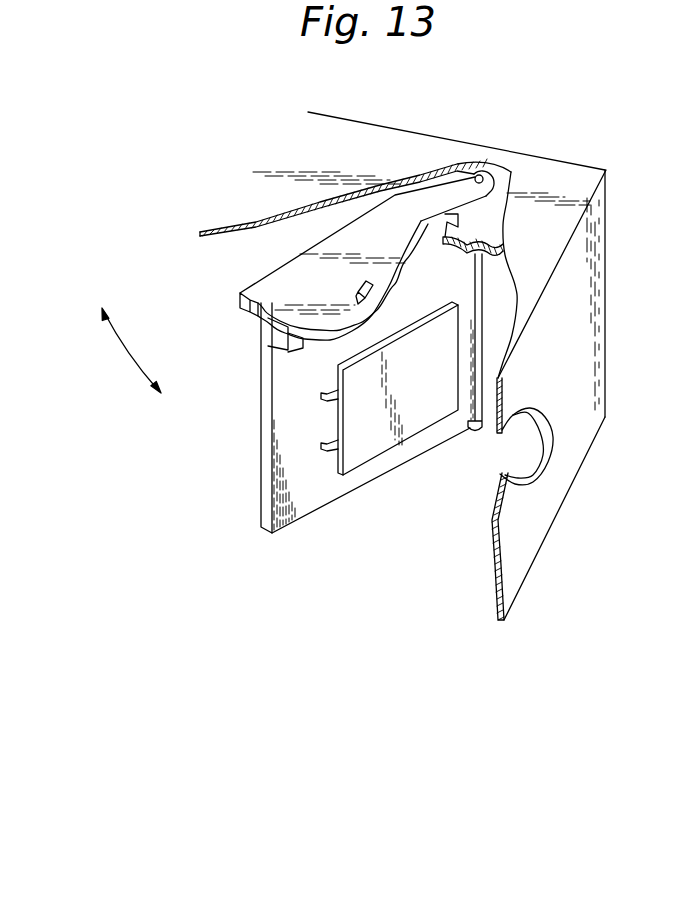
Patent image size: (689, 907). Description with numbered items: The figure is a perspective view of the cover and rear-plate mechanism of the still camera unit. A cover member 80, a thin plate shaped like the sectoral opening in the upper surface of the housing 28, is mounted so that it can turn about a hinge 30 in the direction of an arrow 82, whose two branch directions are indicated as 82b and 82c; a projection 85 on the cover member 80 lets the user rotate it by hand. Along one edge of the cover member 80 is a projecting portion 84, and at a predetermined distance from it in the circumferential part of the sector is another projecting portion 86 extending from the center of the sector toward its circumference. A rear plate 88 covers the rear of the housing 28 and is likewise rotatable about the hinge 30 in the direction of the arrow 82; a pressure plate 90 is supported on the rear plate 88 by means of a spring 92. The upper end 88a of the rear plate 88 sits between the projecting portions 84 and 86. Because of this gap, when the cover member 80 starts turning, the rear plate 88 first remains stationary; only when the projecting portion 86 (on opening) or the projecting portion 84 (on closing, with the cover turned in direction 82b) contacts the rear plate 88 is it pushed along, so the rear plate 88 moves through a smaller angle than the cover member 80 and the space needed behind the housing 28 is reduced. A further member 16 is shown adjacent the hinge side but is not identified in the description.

The door panel 16 is at (542, 446).
The housing 28 is at (569, 177).
The hinge 30 is at (481, 173).
The cover member 80 is at (290, 273).
The arrow 82 is at (122, 354).
The arrow direction 82b is at (156, 391).
The lever upper position 82c is at (103, 316).
The projecting portion 84 is at (242, 316).
The projection 85 is at (357, 289).
The projecting portion 86 is at (285, 355).
The rear plate 88 is at (260, 438).
The upper end 88a is at (258, 355).
The pressure plate 90 is at (378, 462).
The spring 92 is at (326, 395).